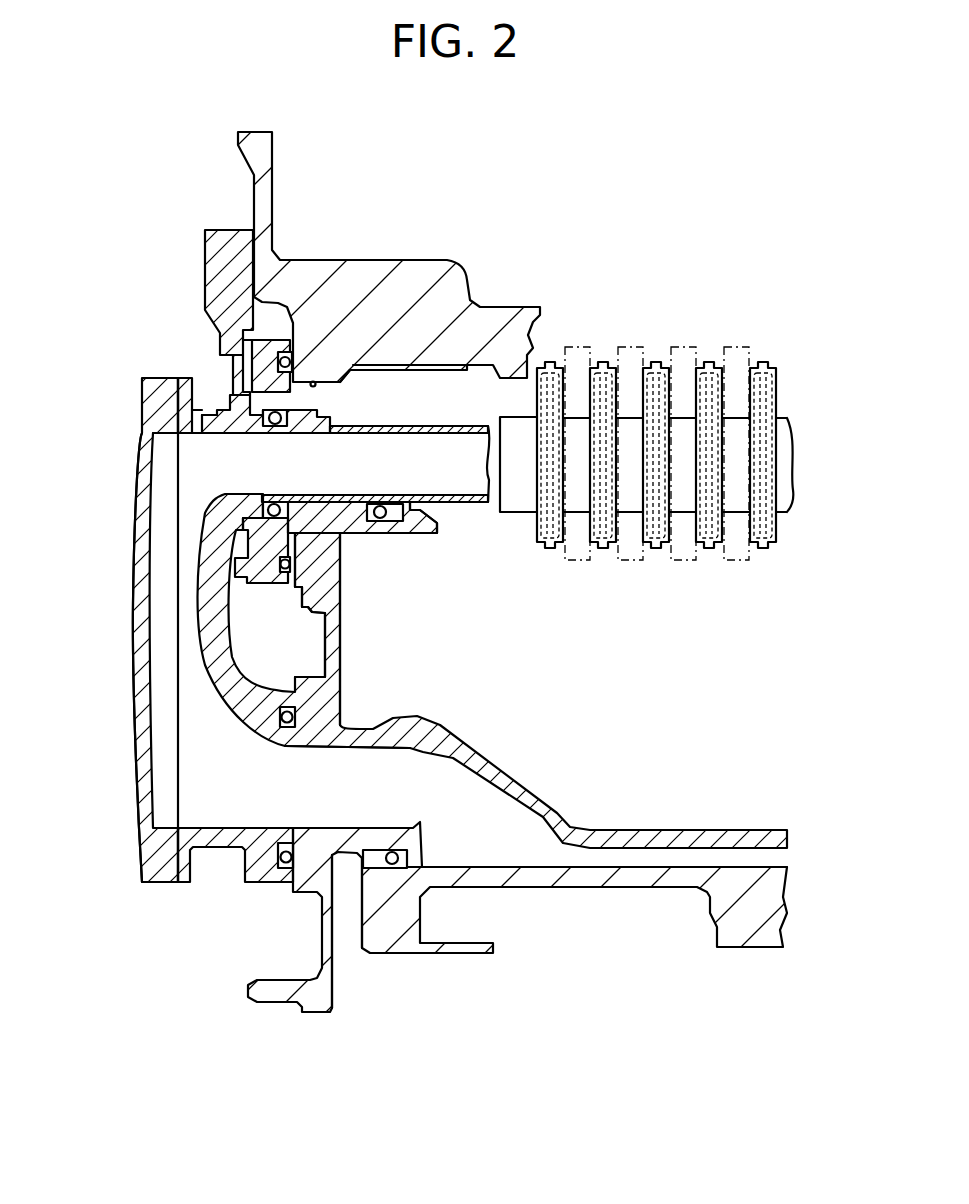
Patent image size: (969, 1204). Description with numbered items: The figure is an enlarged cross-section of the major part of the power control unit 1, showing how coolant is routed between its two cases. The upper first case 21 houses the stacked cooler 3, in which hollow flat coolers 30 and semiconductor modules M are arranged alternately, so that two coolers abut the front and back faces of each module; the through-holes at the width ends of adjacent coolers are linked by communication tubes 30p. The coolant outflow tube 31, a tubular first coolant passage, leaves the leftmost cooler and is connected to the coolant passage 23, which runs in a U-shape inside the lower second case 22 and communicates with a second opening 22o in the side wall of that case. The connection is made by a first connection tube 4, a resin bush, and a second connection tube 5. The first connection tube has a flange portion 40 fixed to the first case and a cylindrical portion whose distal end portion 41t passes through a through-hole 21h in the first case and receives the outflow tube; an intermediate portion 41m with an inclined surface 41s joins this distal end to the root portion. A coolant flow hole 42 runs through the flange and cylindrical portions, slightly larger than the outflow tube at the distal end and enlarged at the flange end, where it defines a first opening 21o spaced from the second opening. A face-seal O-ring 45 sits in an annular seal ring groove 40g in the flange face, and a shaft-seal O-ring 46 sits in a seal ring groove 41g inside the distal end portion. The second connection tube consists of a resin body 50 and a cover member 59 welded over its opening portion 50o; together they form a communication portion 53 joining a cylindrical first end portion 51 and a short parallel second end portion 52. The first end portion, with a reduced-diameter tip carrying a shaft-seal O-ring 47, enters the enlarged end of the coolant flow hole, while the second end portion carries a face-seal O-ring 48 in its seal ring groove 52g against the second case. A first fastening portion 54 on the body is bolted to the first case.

The power control unit 1 is at (191, 190).
The stacked cooler 3 is at (798, 393).
The first connection tube 4 is at (395, 389).
The second connection tube 5 is at (238, 915).
The first case 21 is at (475, 264).
The through-hole 21h is at (313, 380).
The first opening 21o is at (247, 418).
The second case 22 is at (309, 934).
The second opening 22o is at (310, 747).
The coolant passage 23 is at (487, 841).
The cooler 30 is at (778, 538).
The communication tube 30p is at (680, 500).
The coolant outflow tube 31 is at (472, 426).
The flange portion 40 is at (262, 370).
The seal ring groove 40g is at (248, 340).
The intermediate portion 41m is at (205, 392).
The distal end portion 41t is at (447, 388).
The seal ring groove 41g is at (437, 530).
The inclined surface 41s is at (340, 540).
The coolant flow hole 42 is at (287, 357).
The O-ring 45 is at (284, 568).
The O-ring 46 is at (382, 518).
The O-ring 47 is at (230, 502).
The O-ring 48 is at (292, 717).
The body 50 is at (210, 835).
The opening portion 50o is at (178, 608).
The first end portion 51 is at (280, 428).
The second end portion 52 is at (273, 733).
The seal ring groove 52g is at (297, 867).
The communication portion 53 is at (130, 730).
The first fastening portion 54 is at (212, 252).
The cover member 59 is at (187, 857).
The semiconductor module M is at (688, 353).